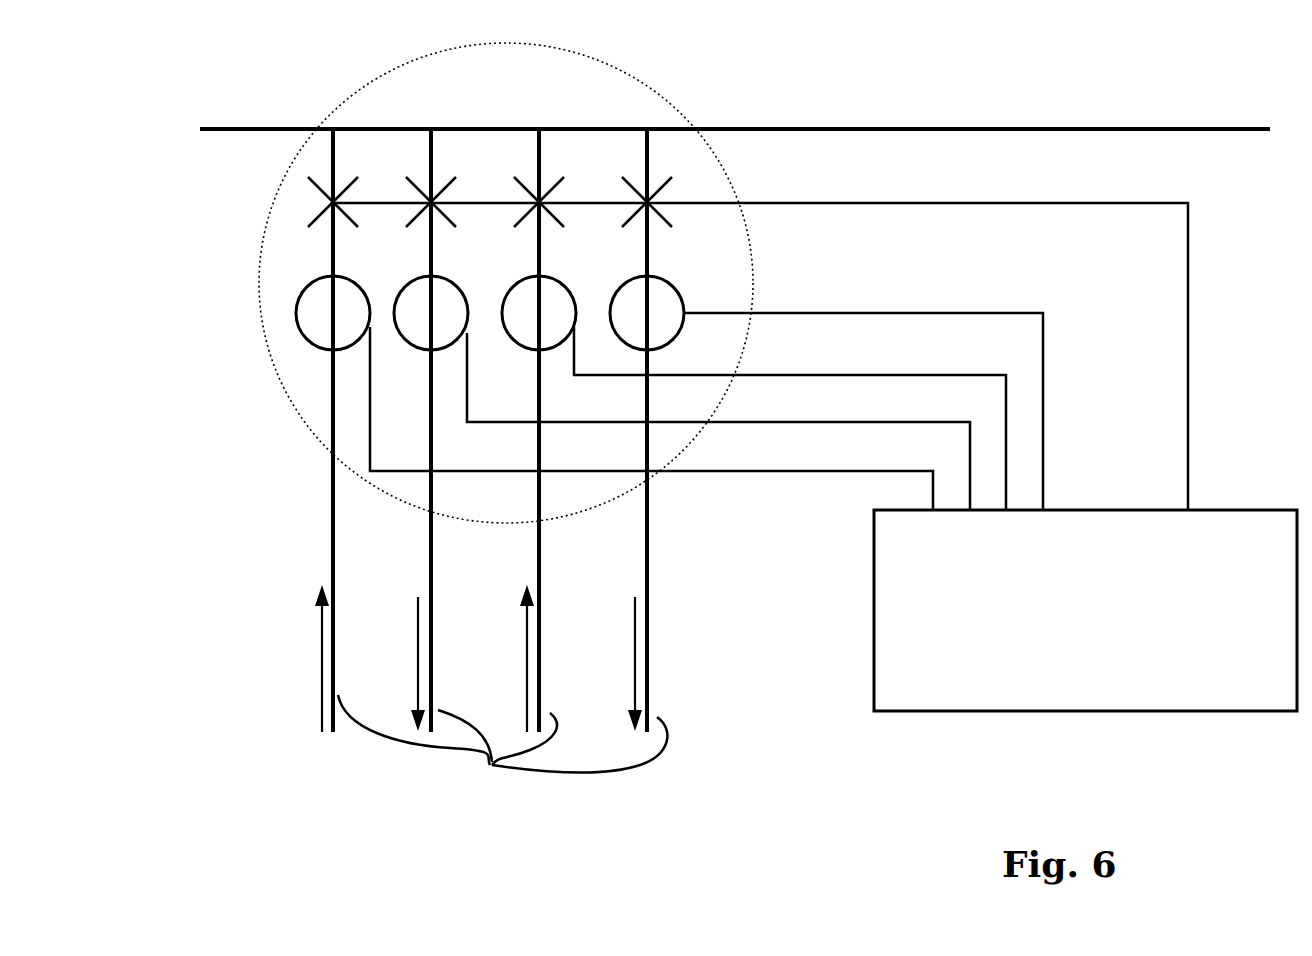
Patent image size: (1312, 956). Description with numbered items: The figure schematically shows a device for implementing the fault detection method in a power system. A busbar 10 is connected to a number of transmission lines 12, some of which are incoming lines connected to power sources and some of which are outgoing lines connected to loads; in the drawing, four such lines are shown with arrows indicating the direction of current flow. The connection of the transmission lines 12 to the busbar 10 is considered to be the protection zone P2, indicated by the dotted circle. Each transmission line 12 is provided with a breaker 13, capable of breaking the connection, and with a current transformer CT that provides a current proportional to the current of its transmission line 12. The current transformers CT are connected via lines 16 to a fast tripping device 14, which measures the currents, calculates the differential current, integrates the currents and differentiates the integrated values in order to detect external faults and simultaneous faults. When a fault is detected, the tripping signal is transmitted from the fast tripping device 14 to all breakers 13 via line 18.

The busbar 10 is at (800, 128).
The transmission lines 12 is at (491, 474).
The breaker 13 is at (330, 203).
The fast tripping device 14 is at (1015, 702).
The lines 16 is at (787, 473).
The line 18 is at (1027, 208).
The current transformer CT is at (313, 303).
The panel zone P2 is at (283, 387).